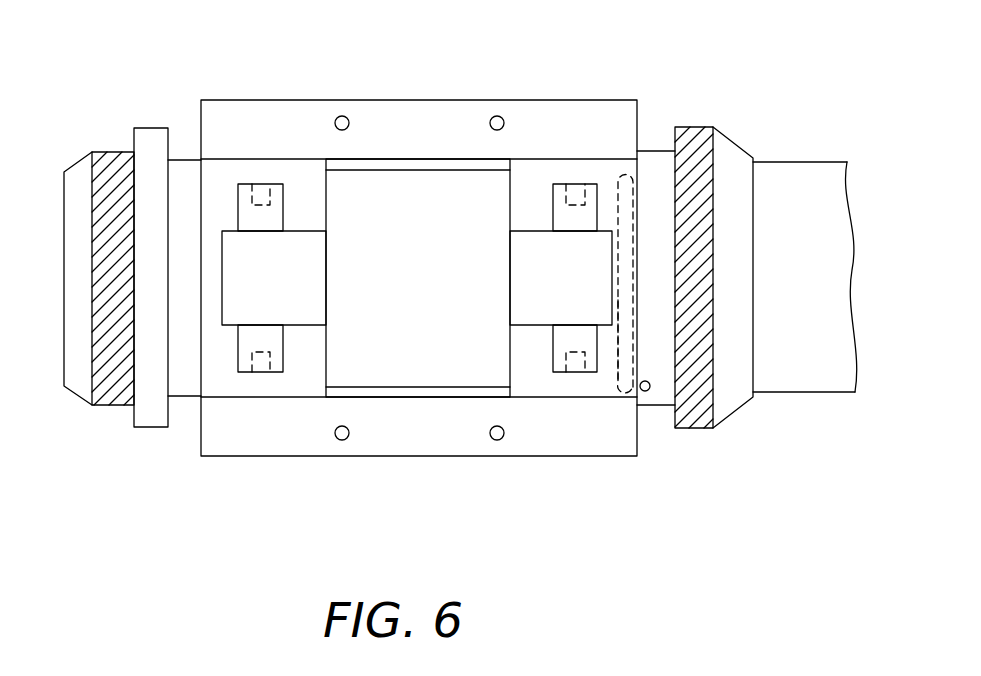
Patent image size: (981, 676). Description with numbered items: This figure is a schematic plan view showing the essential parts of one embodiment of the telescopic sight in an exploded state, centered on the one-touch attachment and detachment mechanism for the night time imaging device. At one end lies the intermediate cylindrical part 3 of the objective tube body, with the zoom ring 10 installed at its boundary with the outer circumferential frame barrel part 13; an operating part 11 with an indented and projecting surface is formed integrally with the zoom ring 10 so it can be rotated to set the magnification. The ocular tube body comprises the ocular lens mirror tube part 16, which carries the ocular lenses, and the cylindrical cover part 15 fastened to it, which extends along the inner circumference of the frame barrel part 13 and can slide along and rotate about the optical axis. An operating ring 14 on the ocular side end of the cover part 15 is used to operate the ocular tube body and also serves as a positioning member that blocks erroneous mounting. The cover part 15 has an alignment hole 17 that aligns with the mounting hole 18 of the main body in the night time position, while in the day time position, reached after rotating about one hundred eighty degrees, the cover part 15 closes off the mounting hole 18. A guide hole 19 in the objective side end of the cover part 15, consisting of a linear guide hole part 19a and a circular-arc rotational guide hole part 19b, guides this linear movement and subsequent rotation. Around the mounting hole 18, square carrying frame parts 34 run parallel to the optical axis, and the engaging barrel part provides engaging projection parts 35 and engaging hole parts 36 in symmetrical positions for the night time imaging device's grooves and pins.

The intermediate cylindrical part 3 is at (816, 383).
The zoom ring 10 is at (733, 142).
The operating part 11 is at (697, 125).
The outer circumferential frame barrel part 13 is at (457, 455).
The operating ring 14 is at (150, 427).
The cylindrical cover part 15 is at (183, 396).
The ocular lens mirror tube part 16 is at (108, 398).
The alignment hole 17 is at (408, 377).
The mounting hole 18 is at (328, 362).
The guide hole 19 is at (630, 372).
The linear guide hole part 19a is at (639, 392).
The rotational guide hole part 19b is at (633, 175).
The carrying frame parts 34 is at (420, 113).
The engaging projection parts 35 is at (279, 184).
The engaging hole parts 36 is at (252, 203).